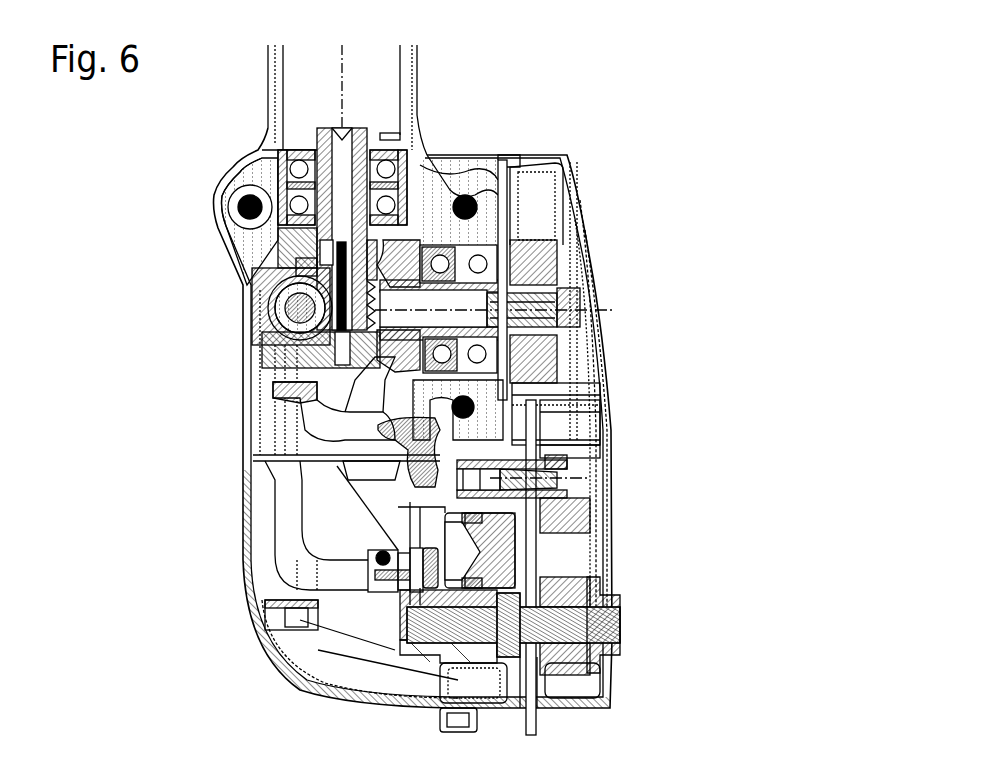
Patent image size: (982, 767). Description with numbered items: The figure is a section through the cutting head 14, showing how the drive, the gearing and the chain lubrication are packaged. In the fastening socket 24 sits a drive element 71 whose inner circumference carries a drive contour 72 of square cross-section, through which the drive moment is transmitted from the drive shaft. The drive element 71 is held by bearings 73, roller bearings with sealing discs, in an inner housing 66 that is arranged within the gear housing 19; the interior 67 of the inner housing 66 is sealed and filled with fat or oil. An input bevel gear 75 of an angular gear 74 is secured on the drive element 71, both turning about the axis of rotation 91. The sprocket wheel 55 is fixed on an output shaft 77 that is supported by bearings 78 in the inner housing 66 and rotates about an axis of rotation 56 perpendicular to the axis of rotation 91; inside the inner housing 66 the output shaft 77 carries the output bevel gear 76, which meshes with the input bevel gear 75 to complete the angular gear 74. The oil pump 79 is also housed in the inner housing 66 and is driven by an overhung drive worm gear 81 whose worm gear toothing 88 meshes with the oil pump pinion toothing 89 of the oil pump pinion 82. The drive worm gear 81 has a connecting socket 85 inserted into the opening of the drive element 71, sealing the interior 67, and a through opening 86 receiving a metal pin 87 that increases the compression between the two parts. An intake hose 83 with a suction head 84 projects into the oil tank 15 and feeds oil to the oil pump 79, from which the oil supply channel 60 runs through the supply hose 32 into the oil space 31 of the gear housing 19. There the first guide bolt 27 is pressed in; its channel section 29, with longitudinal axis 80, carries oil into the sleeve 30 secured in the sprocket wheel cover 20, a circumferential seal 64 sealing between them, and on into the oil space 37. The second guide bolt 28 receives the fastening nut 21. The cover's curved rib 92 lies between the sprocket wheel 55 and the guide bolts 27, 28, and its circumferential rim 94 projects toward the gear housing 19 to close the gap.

The cutting head 14 is at (603, 133).
The oil tank 15 is at (255, 593).
The gear housing 19 is at (232, 173).
The sprocket wheel cover 20 is at (587, 253).
The fastening nut 21 is at (613, 650).
The fastening socket 24 is at (277, 62).
The first guide bolt 27 is at (543, 500).
The guide bolt 28 is at (528, 640).
The channel section 29 is at (540, 495).
The sleeve 30 is at (547, 462).
The oil space 31 is at (422, 493).
The supply hose 32 is at (305, 432).
The oil space 37 is at (553, 484).
The sprocket wheel 55 is at (538, 265).
The axis of rotation 56 is at (612, 312).
The oil supply channel 60 is at (477, 485).
The seal 64 is at (563, 461).
The inner housing 66 is at (233, 202).
The interior 67 is at (355, 338).
The drive element 71 is at (330, 128).
The drive contour 72 is at (335, 157).
The bearings 73 is at (298, 210).
The angular gear 74 is at (375, 263).
The input bevel gear 75 is at (337, 250).
The output bevel gear 76 is at (390, 353).
The output shaft 77 is at (493, 293).
The bearings 78 is at (440, 250).
The oil pump 79 is at (297, 337).
The longitudinal axis 80 is at (557, 473).
The drive worm gear 81 is at (320, 290).
The oil pump pinion 82 is at (283, 312).
The intake hose 83 is at (277, 547).
The suction head 84 is at (380, 590).
The connecting socket 85 is at (307, 263).
The through opening 86 is at (323, 267).
The pin 87 is at (338, 310).
The worm gear toothing 88 is at (408, 237).
The oil pump pinion toothing 89 is at (280, 303).
The axis of rotation 91 is at (344, 62).
The rib 92 is at (537, 407).
The circumferential rim 94 is at (510, 237).